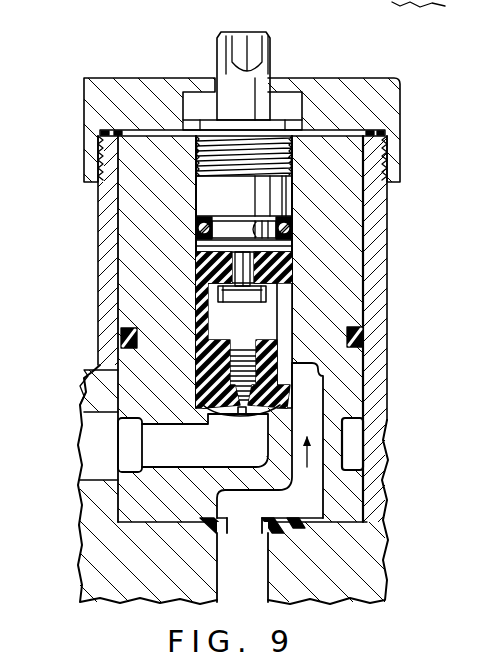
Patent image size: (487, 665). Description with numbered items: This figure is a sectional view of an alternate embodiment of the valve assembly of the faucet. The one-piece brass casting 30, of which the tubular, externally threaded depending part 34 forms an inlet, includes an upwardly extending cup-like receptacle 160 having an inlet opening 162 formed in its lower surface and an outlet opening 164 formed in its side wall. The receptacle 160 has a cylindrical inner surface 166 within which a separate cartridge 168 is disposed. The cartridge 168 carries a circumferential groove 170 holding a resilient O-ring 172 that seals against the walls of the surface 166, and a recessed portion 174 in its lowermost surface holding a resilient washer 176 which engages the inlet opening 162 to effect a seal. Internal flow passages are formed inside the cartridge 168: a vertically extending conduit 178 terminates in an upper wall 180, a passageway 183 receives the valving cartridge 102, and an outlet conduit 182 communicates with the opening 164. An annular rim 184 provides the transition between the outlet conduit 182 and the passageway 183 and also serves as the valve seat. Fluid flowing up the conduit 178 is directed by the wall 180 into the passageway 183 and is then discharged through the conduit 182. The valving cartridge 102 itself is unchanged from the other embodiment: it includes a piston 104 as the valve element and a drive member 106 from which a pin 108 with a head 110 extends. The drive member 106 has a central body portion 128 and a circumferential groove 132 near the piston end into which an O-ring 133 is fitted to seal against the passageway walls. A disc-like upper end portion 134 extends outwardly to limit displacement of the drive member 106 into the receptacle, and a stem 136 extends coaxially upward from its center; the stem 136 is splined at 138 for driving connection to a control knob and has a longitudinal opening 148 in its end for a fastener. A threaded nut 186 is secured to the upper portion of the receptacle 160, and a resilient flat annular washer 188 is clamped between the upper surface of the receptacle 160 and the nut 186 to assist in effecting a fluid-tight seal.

The one-piece brass casting 30 is at (406, 557).
The depending part 34 is at (442, 14).
The valving cartridge 102 is at (366, 249).
The piston 104 is at (134, 371).
The drive member 106 is at (190, 195).
The pin 108 is at (195, 258).
The head 110 is at (221, 296).
The central body portion 128 is at (241, 205).
The circumferential groove 132 is at (262, 213).
The O-ring 133 is at (284, 228).
The disc-like upper end portion 134 is at (326, 108).
The stem 136 is at (270, 110).
The splined portion 138 is at (272, 46).
The longitudinal opening 148 is at (247, 45).
The cup-like receptacle 160 is at (107, 267).
The inlet opening 162 is at (228, 545).
The outlet opening 164 is at (97, 436).
The cylindrical inner surface 166 is at (120, 238).
The cartridge 168 is at (370, 271).
The circumferential groove 170 is at (366, 312).
The O-ring 172 is at (364, 338).
The recessed portion 174 is at (206, 522).
The resilient washer 176 is at (280, 512).
The vertically extending conduit 178 is at (316, 406).
The upper wall 180 is at (330, 372).
The outlet conduit 182 is at (106, 447).
The passageway 183 is at (200, 305).
The annular rim 184 is at (268, 425).
The threaded nut 186 is at (90, 106).
The flat annular washer 188 is at (100, 137).